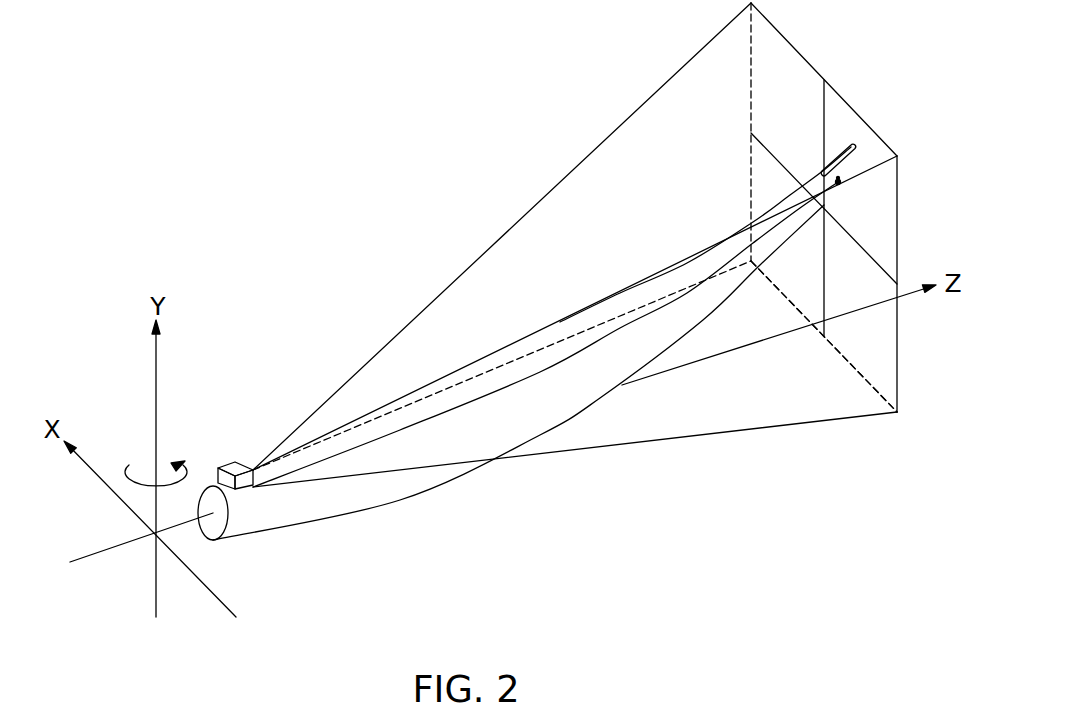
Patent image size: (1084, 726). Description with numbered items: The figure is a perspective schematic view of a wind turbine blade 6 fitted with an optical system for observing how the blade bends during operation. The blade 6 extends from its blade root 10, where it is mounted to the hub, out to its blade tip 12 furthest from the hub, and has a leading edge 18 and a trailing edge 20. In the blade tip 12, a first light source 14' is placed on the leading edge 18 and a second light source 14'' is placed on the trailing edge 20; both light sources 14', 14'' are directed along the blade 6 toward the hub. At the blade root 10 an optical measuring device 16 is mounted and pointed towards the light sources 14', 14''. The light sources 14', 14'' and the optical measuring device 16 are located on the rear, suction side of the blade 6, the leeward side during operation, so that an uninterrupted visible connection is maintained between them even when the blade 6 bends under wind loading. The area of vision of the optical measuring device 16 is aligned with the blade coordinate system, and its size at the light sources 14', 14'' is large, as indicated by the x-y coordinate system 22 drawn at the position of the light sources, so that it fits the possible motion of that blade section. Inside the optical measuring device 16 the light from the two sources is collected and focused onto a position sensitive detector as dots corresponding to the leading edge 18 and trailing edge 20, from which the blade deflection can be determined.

The blade 6 is at (530, 408).
The blade root 10 is at (270, 512).
The blade tip 12 is at (853, 188).
The first light source 14' is at (894, 153).
The second light source 14'' is at (860, 120).
The optical measuring device 16 is at (222, 462).
The leading edge 18 is at (703, 320).
The trailing edge 20 is at (555, 363).
The x-y coordinate system 22 is at (848, 385).